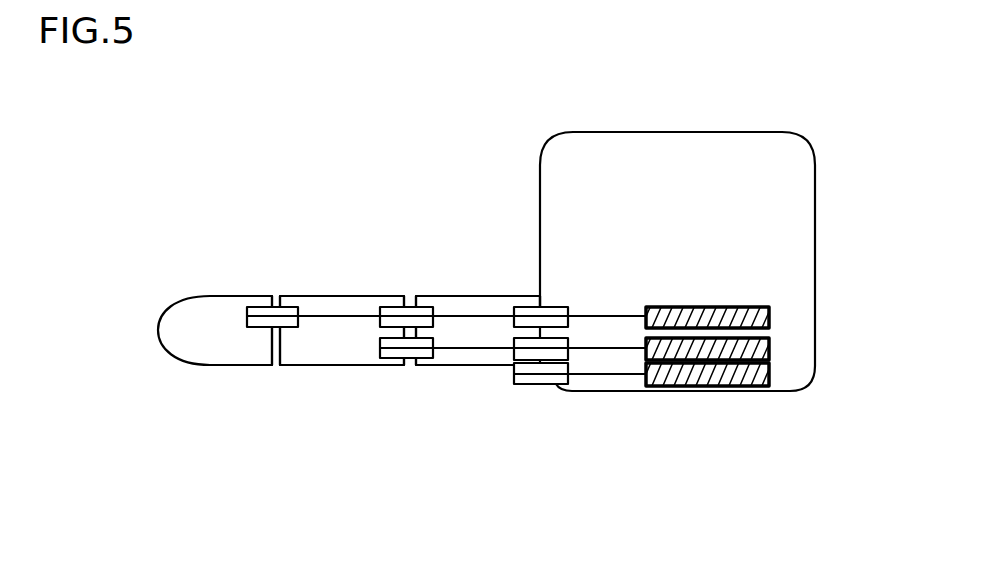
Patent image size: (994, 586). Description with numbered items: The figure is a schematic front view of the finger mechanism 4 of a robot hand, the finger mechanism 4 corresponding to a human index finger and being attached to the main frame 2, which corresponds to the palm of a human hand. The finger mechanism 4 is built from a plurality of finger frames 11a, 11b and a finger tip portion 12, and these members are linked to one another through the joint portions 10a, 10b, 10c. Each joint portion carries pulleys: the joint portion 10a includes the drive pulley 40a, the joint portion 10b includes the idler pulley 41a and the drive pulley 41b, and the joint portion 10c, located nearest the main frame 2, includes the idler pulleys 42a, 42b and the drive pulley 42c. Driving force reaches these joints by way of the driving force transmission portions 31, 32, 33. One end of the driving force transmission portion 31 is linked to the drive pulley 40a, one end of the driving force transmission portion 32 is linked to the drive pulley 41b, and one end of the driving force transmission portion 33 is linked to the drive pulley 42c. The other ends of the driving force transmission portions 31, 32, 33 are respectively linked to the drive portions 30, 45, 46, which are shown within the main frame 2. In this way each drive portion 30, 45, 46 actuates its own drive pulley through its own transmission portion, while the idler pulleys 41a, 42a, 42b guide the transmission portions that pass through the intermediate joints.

The main frame 2 is at (657, 145).
The finger mechanism 4 is at (171, 258).
The finger tip portion 12 is at (185, 342).
The finger frame 11a is at (317, 347).
The finger frame 11b is at (458, 357).
The joint portion 10a is at (272, 285).
The joint portion 10b is at (408, 277).
The joint portion 10c is at (527, 277).
The drive pulley 40a is at (287, 310).
The idler pulley 41a is at (394, 306).
The drive pulley 41b is at (398, 353).
The idler pulley 42a is at (517, 302).
The idler pulley 42b is at (515, 342).
The drive pulley 42c is at (533, 370).
The drive portion 30 is at (770, 313).
The driving force transmission portion 31 is at (625, 300).
The driving force transmission portion 32 is at (588, 350).
The driving force transmission portion 33 is at (622, 374).
The drive portion 45 is at (770, 348).
The drive portion 46 is at (770, 375).